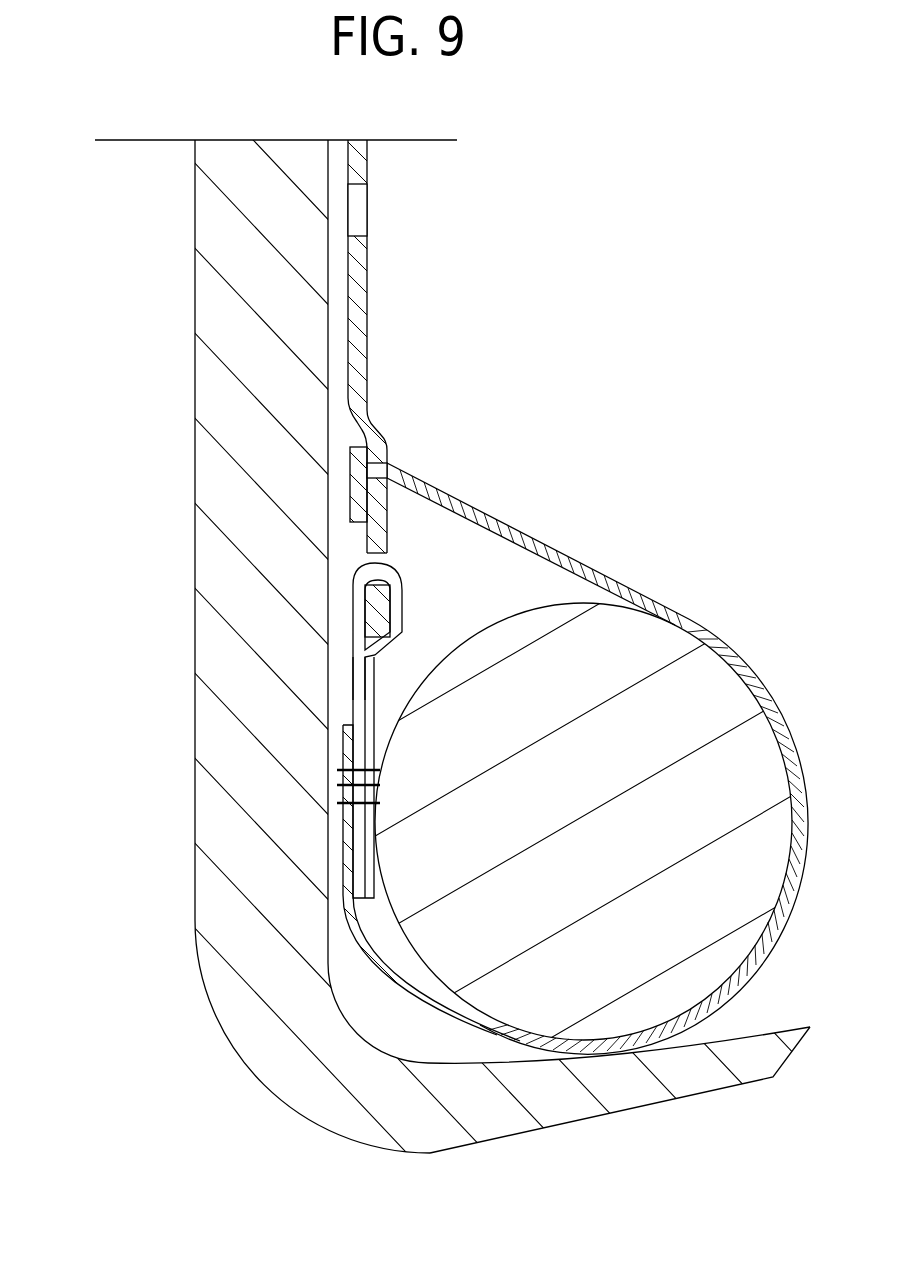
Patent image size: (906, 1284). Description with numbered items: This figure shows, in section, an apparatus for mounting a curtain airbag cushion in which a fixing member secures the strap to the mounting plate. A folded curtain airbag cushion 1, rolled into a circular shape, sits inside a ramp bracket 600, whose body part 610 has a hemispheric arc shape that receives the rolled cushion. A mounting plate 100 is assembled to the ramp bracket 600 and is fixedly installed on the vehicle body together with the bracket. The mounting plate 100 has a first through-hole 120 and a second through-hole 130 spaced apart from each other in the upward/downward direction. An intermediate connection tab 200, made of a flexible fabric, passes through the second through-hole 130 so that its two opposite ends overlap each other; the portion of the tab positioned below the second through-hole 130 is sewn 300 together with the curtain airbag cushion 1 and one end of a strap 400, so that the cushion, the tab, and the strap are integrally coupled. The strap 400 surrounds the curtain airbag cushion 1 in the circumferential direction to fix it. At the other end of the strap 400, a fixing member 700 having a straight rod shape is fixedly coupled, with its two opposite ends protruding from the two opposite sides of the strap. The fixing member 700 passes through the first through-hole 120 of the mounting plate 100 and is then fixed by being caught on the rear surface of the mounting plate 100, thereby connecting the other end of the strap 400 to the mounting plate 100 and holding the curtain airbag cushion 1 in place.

The curtain airbag cushion 1 is at (702, 687).
The mounting plate 100 is at (363, 312).
The first through-hole 120 is at (377, 470).
The second through-hole 130 is at (362, 562).
The intermediate connection tab 200 is at (362, 650).
The sewing 300 is at (337, 800).
The strap 400 is at (538, 540).
The ramp bracket 600 is at (193, 865).
The body part 610 is at (247, 1015).
The fixing member 700 is at (350, 488).